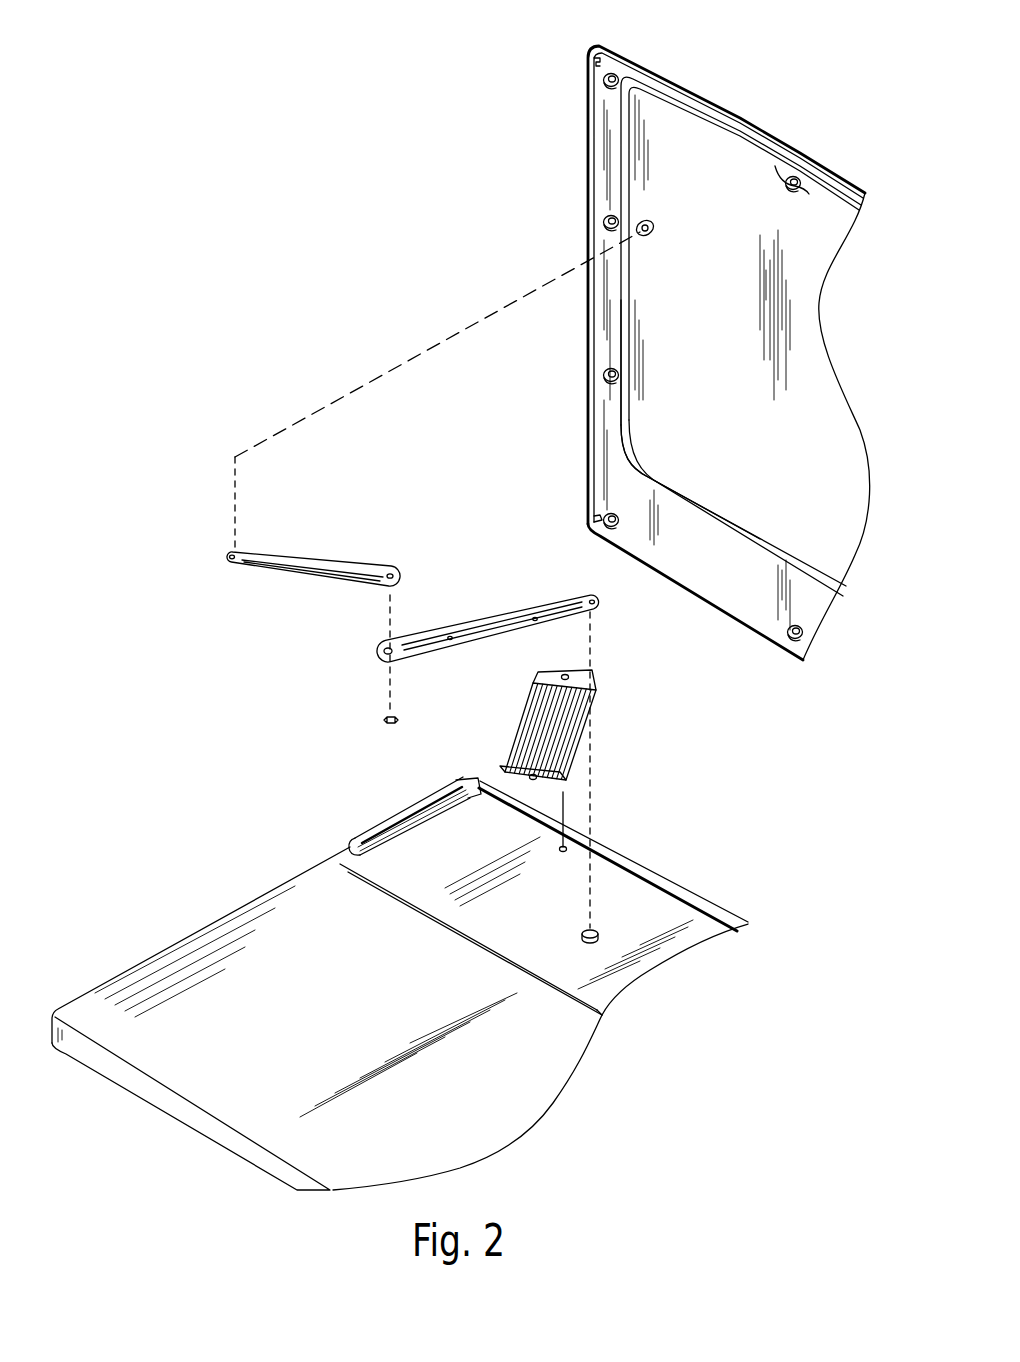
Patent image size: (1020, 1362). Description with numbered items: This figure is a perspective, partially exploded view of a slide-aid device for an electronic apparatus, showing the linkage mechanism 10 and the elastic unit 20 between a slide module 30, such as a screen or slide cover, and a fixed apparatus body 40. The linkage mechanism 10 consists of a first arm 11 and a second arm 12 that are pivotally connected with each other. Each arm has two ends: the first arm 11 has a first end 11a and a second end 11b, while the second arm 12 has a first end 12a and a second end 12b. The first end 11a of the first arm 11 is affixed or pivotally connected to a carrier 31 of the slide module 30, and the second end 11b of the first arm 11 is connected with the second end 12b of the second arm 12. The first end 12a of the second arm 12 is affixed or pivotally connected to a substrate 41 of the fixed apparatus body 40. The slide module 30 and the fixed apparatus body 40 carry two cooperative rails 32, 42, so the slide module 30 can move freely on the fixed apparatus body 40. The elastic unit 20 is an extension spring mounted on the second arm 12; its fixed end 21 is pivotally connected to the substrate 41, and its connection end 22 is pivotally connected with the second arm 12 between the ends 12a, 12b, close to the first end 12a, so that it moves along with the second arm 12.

The linkage mechanism 10 is at (391, 599).
The first arm 11 is at (333, 531).
The first end of the first arm 11a is at (242, 554).
The second end of the first arm 11b is at (380, 565).
The second arm 12 is at (488, 597).
The first end of the second arm 12a is at (590, 595).
The second end of the second arm 12b is at (400, 638).
The elastic unit 20 is at (564, 692).
The fixed end 21 is at (510, 780).
The connection end 22 is at (578, 673).
The slide module 30 is at (733, 110).
The carrier 31 is at (653, 325).
The rail 32 is at (623, 177).
The fixed apparatus body 40 is at (400, 968).
The substrate 41 is at (487, 932).
The rail 42 is at (382, 817).